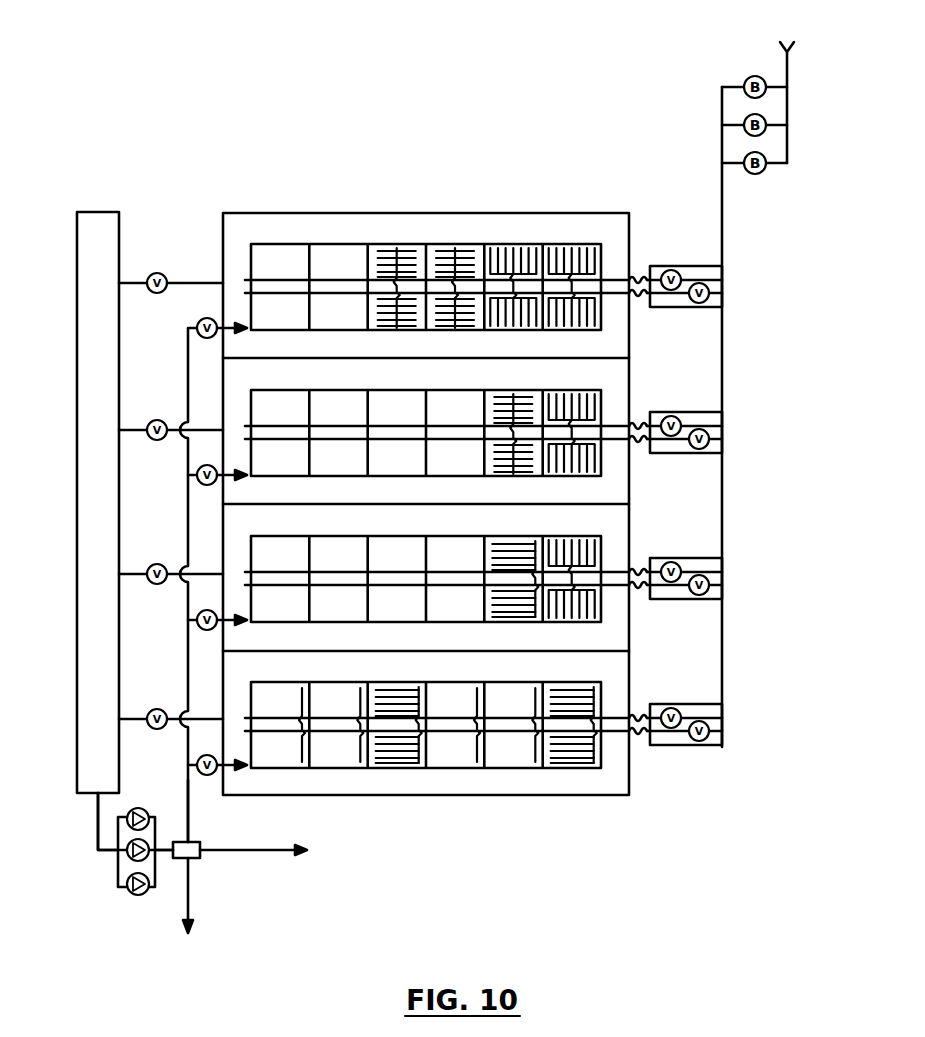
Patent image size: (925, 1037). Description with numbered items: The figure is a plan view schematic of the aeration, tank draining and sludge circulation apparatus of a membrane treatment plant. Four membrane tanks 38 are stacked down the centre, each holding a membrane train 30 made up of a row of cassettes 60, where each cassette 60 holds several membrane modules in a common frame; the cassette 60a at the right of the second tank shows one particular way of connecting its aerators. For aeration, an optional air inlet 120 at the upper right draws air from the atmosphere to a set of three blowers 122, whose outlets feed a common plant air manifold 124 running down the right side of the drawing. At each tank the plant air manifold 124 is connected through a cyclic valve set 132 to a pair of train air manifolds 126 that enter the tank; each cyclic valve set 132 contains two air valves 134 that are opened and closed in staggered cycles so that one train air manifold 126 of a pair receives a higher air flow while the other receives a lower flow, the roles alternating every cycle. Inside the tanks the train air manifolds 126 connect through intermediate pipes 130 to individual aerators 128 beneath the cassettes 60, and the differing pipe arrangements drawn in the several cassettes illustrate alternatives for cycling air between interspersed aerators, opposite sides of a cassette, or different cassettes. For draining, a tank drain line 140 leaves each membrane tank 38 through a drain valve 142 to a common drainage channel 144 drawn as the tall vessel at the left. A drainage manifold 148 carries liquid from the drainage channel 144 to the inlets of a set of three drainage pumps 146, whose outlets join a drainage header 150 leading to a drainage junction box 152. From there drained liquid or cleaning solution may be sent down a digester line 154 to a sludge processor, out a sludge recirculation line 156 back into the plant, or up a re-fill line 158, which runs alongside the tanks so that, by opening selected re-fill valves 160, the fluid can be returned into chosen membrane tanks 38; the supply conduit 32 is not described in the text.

The membrane train 30 is at (275, 244).
The supply conduit 32 is at (237, 358).
The membrane tank 38 is at (402, 222).
The cassette 60 is at (454, 239).
The cassette 60a is at (587, 477).
The air inlet 120 is at (790, 65).
The blower 122 is at (755, 76).
The plant air manifold 124 is at (722, 218).
The train air manifold 126 is at (640, 276).
The aerator 128 is at (598, 247).
The intermediate pipe 130 is at (397, 284).
The cyclic valve set 132 is at (680, 265).
The air valve 134 is at (722, 292).
The tank drain line 140 is at (132, 278).
The drain valve 142 is at (170, 273).
The drainage channel 144 is at (77, 776).
The drainage pump 146 is at (138, 897).
The drainage manifold 148 is at (118, 870).
The drainage header 150 is at (155, 882).
The drainage junction box 152 is at (200, 858).
The digester line 154 is at (190, 912).
The sludge recirculation line 156 is at (285, 858).
The re-fill line 158 is at (188, 822).
The re-fill valve 160 is at (210, 777).